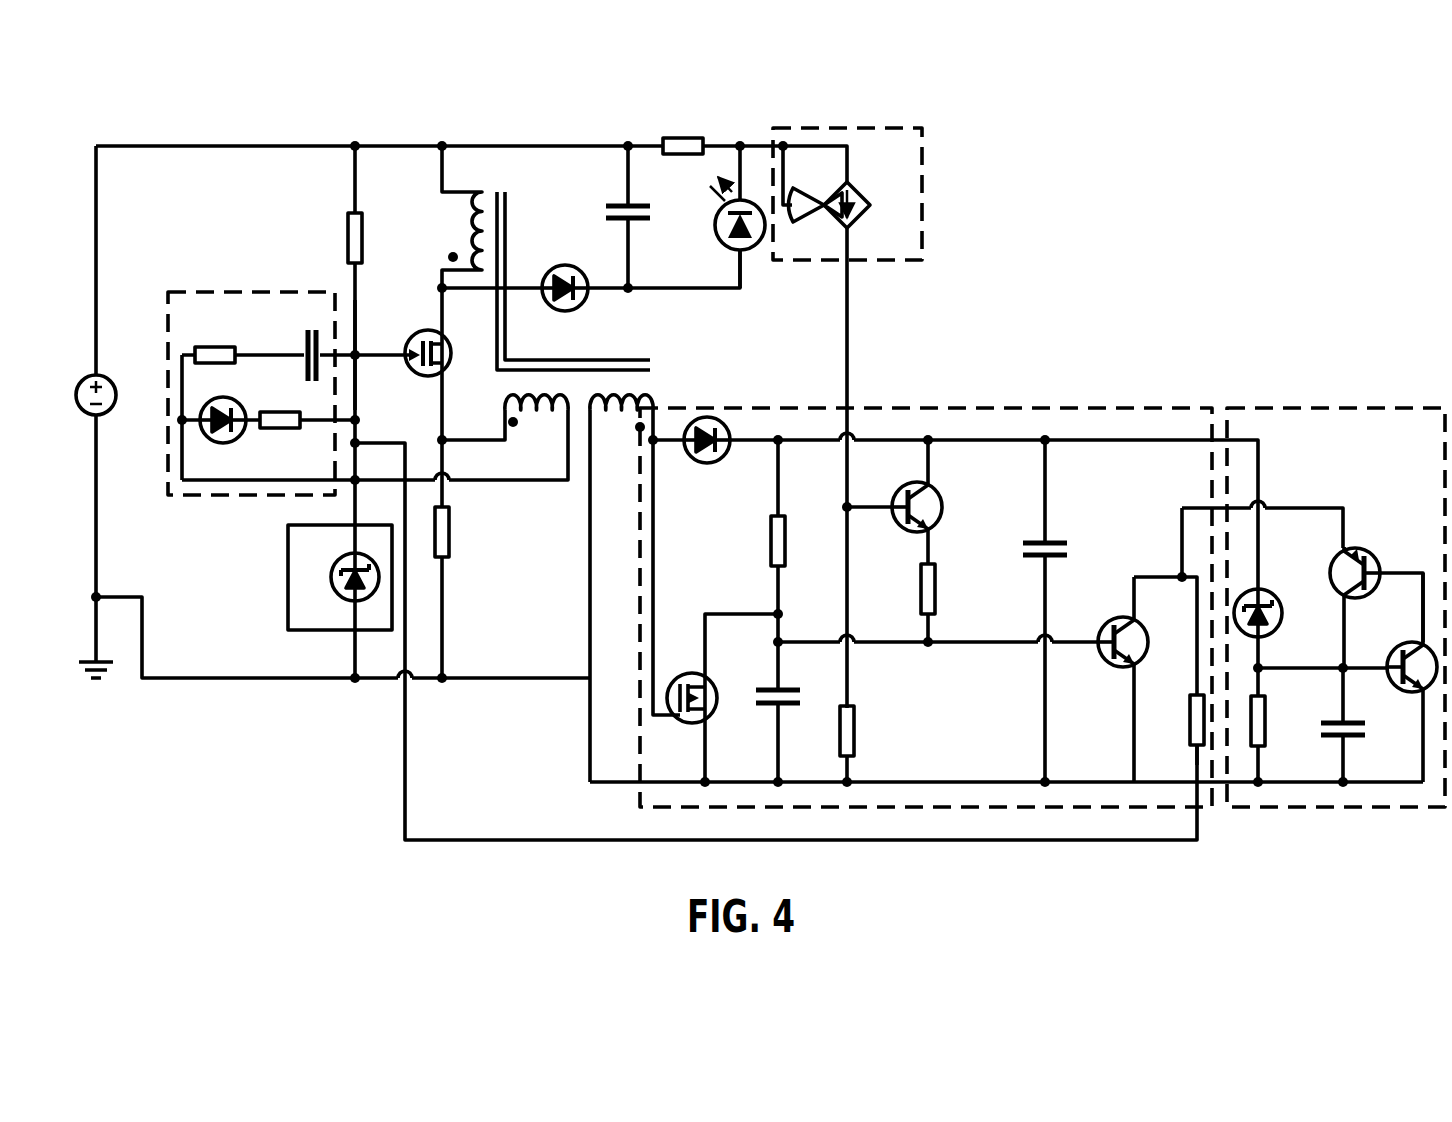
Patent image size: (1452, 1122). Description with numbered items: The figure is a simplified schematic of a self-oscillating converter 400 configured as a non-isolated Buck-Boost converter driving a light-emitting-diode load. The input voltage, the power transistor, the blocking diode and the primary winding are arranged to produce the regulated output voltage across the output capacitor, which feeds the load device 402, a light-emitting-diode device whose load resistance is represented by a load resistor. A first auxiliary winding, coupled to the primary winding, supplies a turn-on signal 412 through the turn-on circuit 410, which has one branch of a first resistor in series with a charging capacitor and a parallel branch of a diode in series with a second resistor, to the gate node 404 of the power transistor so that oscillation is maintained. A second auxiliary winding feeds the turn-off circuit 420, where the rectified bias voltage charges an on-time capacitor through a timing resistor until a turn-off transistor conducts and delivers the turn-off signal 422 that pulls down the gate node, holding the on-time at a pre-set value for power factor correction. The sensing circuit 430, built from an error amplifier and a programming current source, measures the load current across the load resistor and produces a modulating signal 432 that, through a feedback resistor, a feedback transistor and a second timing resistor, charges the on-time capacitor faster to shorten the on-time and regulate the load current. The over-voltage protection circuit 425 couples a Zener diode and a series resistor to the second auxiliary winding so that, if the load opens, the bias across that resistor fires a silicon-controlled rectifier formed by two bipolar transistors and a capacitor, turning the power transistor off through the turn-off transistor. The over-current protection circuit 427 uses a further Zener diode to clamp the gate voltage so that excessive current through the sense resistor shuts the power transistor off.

The self-oscillating converter 400 is at (760, 442).
The load device 402 is at (706, 126).
The gate node 404 is at (358, 352).
The turn-on circuit 410 is at (214, 288).
The turn-on signal 412 is at (357, 350).
The turn-off circuit 420 is at (1058, 407).
The turn-off signal 422 is at (407, 752).
The over-voltage protection circuit 425 is at (1305, 407).
The over-current protection circuit 427 is at (288, 540).
The sensing circuit 430 is at (901, 122).
The modulating signal 432 is at (849, 330).